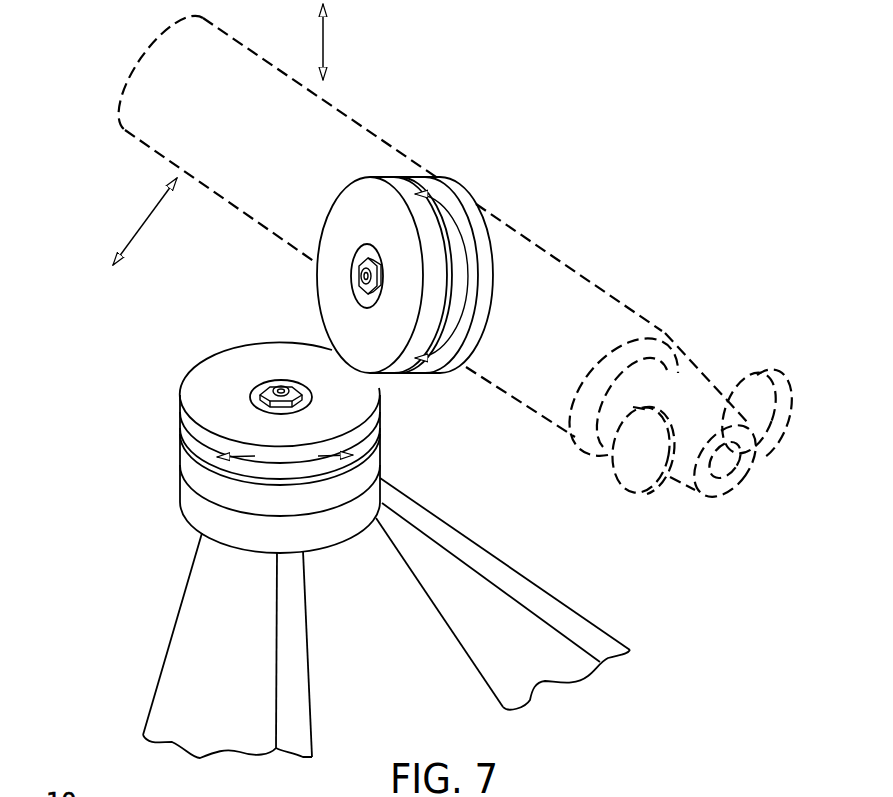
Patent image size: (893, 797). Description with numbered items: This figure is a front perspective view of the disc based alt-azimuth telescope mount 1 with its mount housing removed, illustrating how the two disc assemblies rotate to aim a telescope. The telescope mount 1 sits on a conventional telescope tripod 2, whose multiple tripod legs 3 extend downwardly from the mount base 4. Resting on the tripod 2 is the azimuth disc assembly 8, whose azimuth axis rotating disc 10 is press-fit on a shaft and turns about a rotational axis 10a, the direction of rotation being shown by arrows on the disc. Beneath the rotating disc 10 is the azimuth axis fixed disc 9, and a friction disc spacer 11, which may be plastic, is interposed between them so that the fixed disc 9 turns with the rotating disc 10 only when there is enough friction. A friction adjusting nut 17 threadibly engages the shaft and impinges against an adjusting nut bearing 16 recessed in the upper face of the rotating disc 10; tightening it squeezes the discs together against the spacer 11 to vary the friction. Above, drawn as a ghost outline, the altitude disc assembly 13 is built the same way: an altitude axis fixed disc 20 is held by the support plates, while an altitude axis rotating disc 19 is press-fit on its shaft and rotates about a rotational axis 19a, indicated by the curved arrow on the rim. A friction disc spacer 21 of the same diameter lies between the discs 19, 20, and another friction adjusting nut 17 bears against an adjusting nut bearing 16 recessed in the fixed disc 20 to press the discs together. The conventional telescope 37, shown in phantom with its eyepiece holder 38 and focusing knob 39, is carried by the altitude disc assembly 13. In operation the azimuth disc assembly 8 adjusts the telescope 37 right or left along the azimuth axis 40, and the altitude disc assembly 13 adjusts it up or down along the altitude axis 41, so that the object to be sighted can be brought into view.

The telescope mount 1 is at (236, 302).
The telescope tripod 2 is at (322, 562).
The tripod legs 3 is at (473, 660).
The mount base 4 is at (200, 522).
The azimuth disc assembly 8 is at (400, 458).
The azimuth axis fixed disc 9 is at (193, 472).
The azimuth axis rotating disc 10 is at (291, 547).
The rotational axis 10a is at (283, 465).
The friction disc spacer 11 is at (180, 447).
The altitude disc assembly 13 is at (403, 282).
The adjusting nut bearing 16 is at (350, 276).
The friction adjusting nut 17 is at (352, 289).
The altitude axis rotating disc 19 is at (447, 366).
The rotational axis 19a is at (472, 302).
The altitude axis fixed disc 20 is at (330, 225).
The friction disc spacer 21 is at (431, 376).
The telescope 37 is at (570, 267).
The eyepiece holder 38 is at (703, 418).
The focusing knob 39 is at (635, 472).
The azimuth axis 40 is at (145, 223).
The altitude axis 41 is at (326, 38).